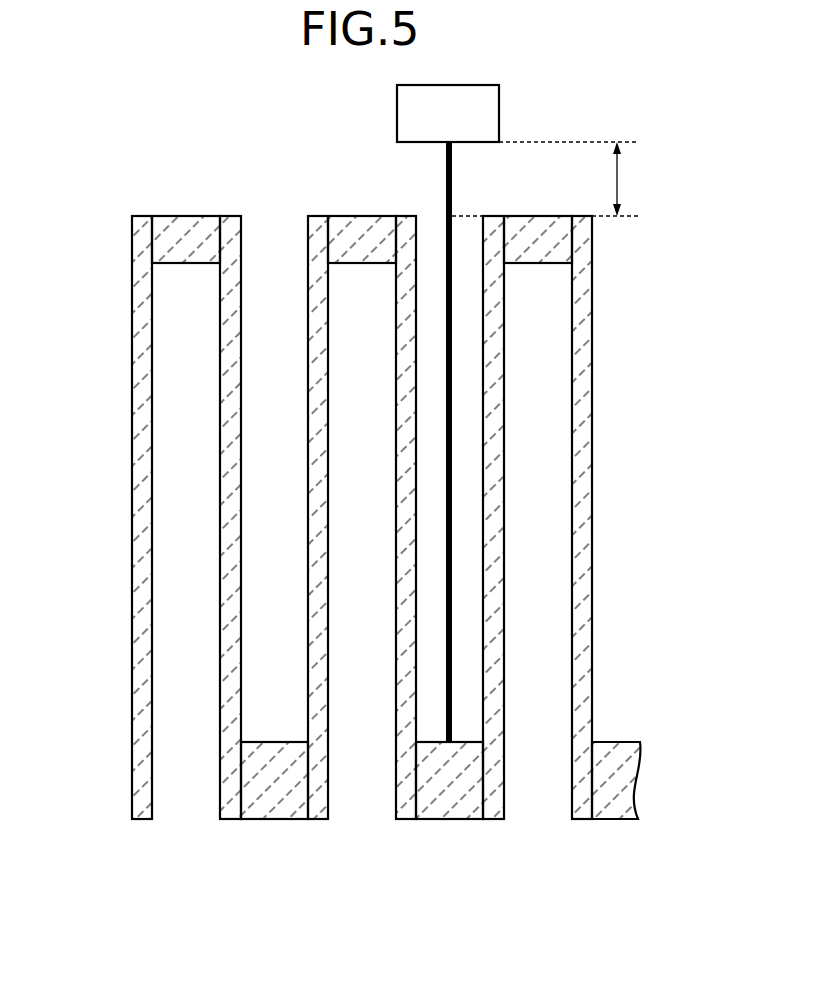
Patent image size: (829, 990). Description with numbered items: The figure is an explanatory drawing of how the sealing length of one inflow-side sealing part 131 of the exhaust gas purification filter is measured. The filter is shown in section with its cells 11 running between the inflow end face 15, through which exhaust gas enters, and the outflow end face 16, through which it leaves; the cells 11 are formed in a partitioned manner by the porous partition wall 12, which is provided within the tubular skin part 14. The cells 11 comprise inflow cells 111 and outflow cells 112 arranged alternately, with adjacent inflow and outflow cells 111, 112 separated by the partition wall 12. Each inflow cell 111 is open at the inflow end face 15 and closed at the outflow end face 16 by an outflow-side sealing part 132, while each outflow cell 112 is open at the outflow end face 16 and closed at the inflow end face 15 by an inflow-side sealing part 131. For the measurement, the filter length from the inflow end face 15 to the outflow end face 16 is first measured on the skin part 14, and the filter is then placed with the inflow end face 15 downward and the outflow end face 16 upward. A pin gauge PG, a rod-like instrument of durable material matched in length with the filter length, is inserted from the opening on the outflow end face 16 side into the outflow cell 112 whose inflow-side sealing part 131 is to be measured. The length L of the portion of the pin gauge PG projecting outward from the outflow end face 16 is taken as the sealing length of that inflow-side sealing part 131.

The cell 11 is at (430, 585).
The inflow cell 111 is at (367, 788).
The outflow cell 112 is at (463, 383).
The partition wall 12 is at (495, 537).
The inflow-side sealing part 131 is at (462, 807).
The outflow-side sealing part 132 is at (335, 227).
The skin part 14 is at (142, 460).
The inflow end face 15 is at (319, 822).
The outflow end face 16 is at (230, 215).
The pin gauge PG is at (440, 175).
The length of projecting portion of pin gauge L is at (547, 179).